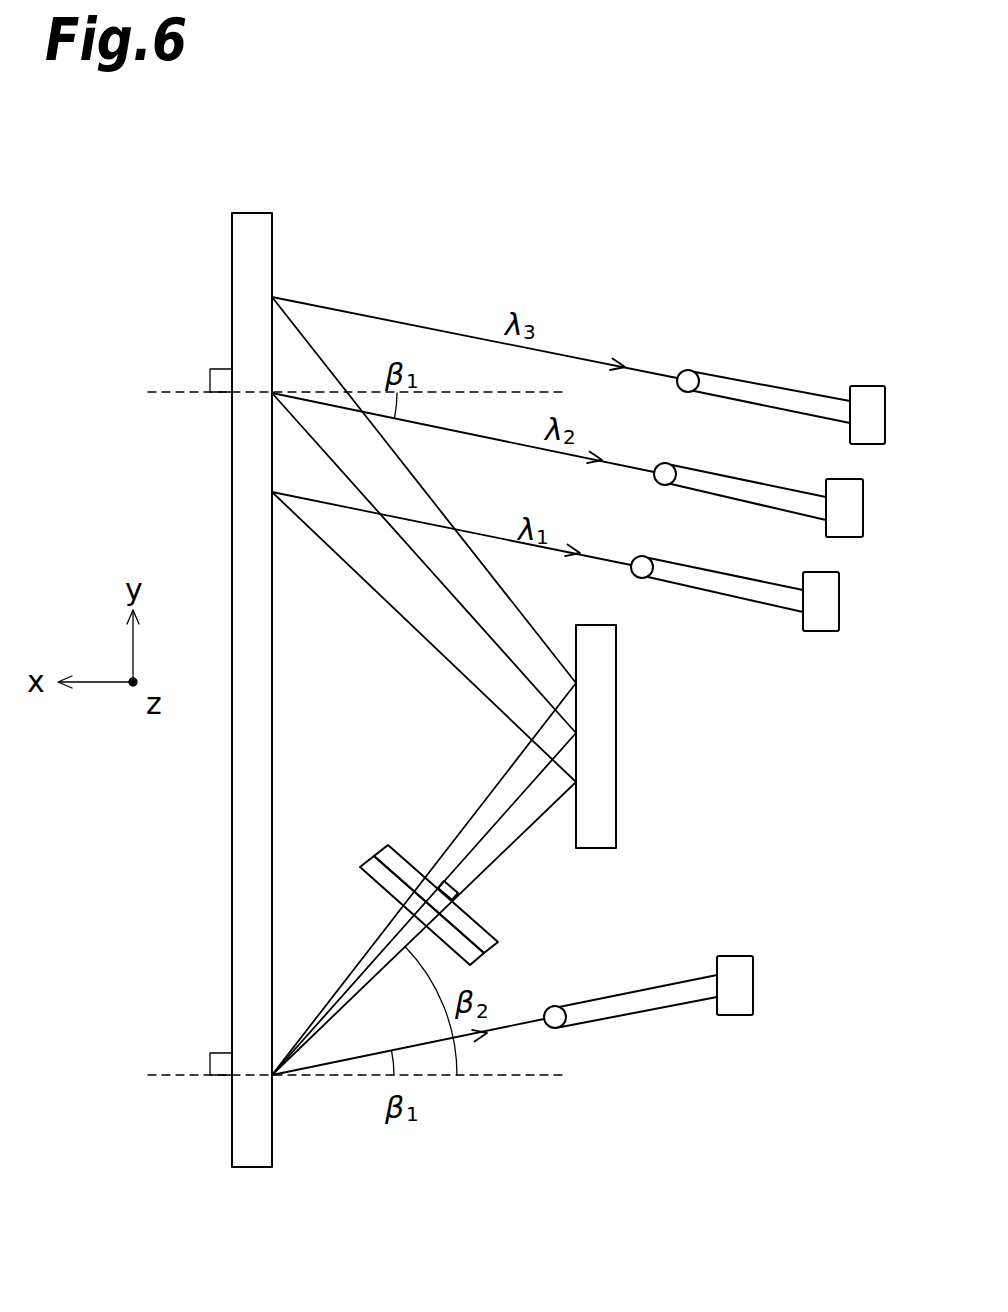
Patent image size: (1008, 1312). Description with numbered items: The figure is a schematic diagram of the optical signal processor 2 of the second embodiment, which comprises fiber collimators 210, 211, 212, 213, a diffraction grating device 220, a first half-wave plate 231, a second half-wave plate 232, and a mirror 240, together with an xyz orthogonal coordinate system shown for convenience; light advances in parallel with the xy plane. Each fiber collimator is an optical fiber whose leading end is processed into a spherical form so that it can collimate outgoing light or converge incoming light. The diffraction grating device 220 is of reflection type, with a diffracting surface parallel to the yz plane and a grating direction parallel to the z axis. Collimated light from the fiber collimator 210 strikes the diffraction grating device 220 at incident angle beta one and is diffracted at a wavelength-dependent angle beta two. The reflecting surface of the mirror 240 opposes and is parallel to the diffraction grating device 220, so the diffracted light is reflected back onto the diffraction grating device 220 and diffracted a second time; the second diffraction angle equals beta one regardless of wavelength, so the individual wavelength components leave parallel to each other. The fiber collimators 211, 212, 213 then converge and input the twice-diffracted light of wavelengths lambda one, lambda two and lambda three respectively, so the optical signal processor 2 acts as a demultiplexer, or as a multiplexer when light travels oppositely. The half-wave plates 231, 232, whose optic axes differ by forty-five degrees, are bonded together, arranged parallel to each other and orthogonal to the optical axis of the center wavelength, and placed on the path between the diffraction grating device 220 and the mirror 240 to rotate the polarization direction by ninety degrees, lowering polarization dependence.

The optical signal processor 2 is at (753, 318).
The fiber collimator 210 is at (683, 978).
The fiber collimator 211 is at (763, 593).
The fiber collimator 212 is at (795, 503).
The fiber collimator 213 is at (823, 408).
The diffraction grating device 220 is at (272, 728).
The first half-wave plate 231 is at (360, 867).
The second half-wave plate 232 is at (488, 927).
The mirror 240 is at (617, 795).